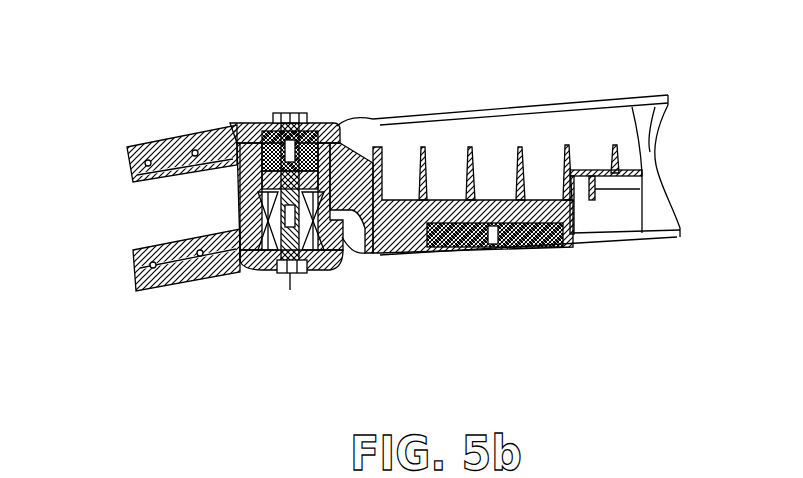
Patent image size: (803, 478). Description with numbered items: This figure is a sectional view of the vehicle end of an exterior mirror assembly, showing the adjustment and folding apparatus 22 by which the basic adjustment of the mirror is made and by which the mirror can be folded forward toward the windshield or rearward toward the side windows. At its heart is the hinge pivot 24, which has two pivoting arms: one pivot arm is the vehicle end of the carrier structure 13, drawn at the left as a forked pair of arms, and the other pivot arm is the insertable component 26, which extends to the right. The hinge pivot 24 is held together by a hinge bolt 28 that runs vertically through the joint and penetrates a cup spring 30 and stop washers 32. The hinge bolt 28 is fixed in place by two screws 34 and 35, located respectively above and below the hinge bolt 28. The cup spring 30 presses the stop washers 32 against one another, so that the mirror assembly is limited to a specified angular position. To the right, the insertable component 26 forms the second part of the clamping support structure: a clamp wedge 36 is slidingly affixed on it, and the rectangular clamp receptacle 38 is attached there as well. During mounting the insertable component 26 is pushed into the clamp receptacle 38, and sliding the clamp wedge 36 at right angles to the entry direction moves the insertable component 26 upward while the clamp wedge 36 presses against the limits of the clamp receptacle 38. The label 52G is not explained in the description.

The carrier structure 13 is at (155, 177).
The adjustment and folding apparatus 22 is at (292, 300).
The hinge pivot 24 is at (268, 88).
The insertable component 26 is at (630, 157).
The hinge bolt 28 is at (343, 160).
The cup spring 30 is at (263, 240).
The stop washers 32 is at (250, 135).
The screw 34 is at (305, 112).
The screw 35 is at (310, 273).
The clamp wedge 36 is at (550, 243).
The clamp receptacle 38 is at (670, 97).
The compartment 52G is at (660, 187).